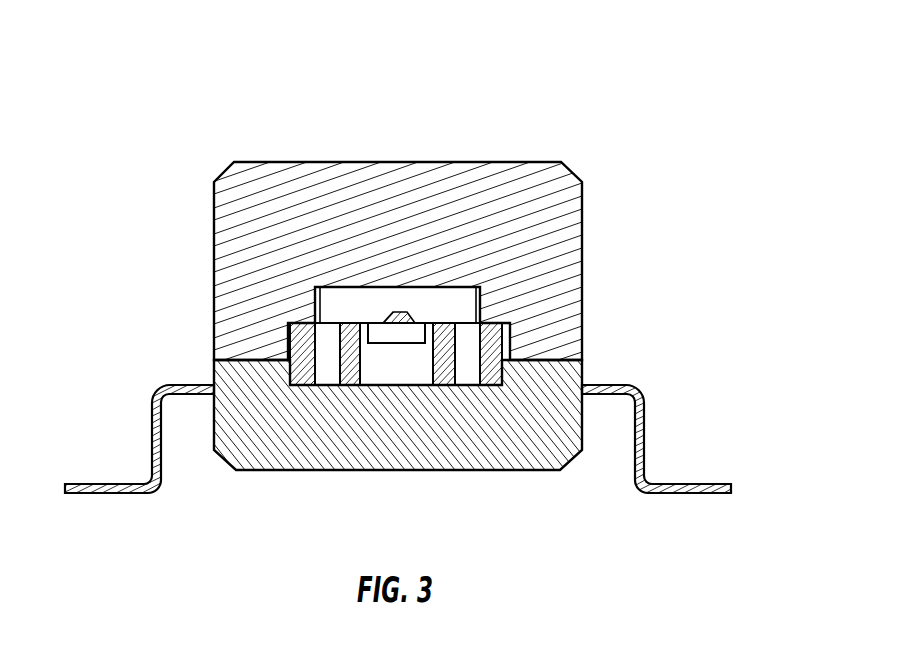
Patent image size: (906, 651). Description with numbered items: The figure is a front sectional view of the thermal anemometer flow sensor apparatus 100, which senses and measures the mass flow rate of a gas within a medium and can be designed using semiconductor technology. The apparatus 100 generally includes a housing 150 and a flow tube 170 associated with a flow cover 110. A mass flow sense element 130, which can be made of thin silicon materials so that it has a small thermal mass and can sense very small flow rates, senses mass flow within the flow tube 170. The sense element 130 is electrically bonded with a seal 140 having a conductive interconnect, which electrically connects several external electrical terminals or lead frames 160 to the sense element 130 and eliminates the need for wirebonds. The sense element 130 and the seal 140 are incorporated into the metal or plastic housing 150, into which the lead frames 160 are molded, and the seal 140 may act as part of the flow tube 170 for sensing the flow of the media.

The thermal anemometer flow sensor apparatus 100 is at (138, 58).
The flow cover 110 is at (513, 170).
The mass flow sense element 130 is at (397, 312).
The seal 140 is at (352, 365).
The housing 150 is at (468, 458).
The lead frames 160 is at (686, 485).
The flow tube 170 is at (423, 364).